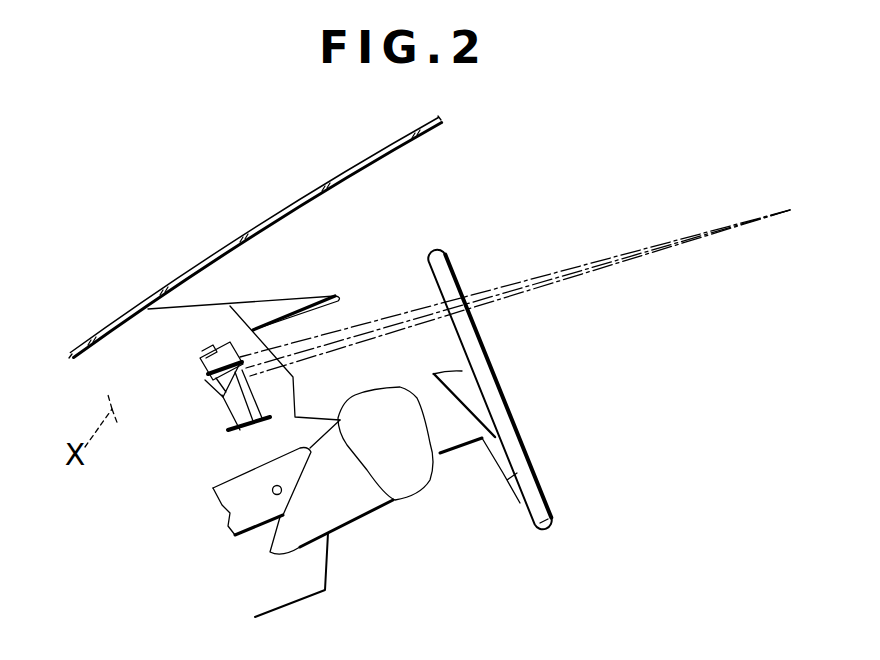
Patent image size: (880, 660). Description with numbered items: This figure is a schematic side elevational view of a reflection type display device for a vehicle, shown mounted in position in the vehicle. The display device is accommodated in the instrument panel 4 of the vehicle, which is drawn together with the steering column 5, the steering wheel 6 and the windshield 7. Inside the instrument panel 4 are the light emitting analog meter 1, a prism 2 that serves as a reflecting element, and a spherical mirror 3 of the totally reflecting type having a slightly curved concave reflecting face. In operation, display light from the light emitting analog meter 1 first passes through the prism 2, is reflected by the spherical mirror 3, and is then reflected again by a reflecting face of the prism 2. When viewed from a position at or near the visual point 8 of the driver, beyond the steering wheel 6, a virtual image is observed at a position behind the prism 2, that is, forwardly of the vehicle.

The light emitting analog meter 1 is at (200, 360).
The prism 2 is at (206, 384).
The spherical mirror 3 is at (232, 438).
The instrument panel 4 is at (217, 330).
The steering column 5 is at (410, 480).
The steering wheel 6 is at (533, 457).
The windshield 7 is at (278, 207).
The visual point 8 is at (790, 210).